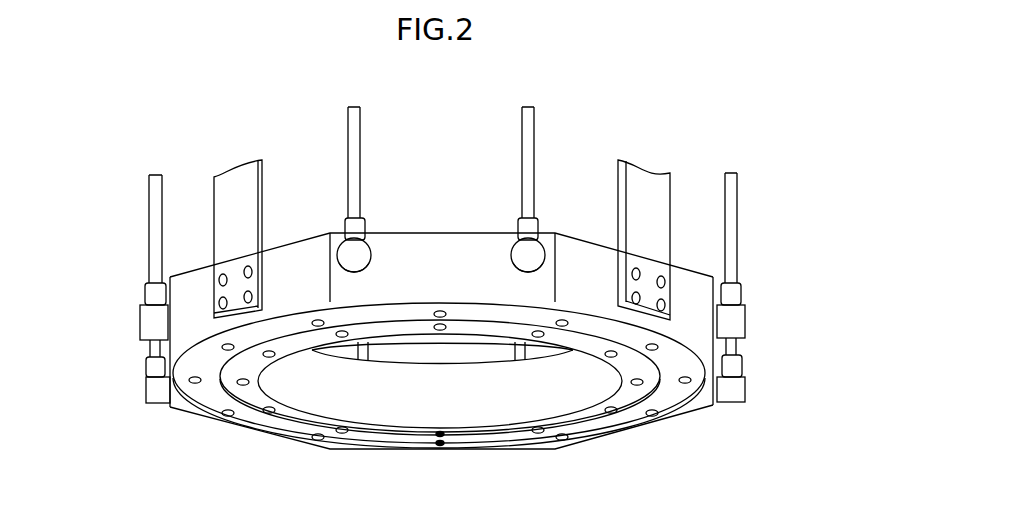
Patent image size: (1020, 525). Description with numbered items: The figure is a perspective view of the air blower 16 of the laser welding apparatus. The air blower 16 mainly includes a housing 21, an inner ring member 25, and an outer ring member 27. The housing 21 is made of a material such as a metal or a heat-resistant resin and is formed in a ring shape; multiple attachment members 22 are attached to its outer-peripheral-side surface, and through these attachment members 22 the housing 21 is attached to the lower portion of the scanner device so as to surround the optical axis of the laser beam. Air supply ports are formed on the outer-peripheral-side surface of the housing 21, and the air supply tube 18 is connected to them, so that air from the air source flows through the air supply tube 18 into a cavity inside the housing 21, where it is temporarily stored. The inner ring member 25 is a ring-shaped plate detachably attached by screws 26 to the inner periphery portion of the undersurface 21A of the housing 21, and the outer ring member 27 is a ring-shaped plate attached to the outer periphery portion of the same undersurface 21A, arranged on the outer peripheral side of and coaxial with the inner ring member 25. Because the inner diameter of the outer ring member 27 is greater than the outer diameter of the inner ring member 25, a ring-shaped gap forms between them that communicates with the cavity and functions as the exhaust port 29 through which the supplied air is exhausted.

The air blower 16 is at (708, 102).
The air supply tube 18 is at (150, 219).
The housing 21 is at (436, 240).
The undersurface of the housing 21A is at (697, 400).
The attachment members 22 is at (218, 178).
The inner ring member 25 is at (250, 394).
The screws 26 is at (540, 434).
The outer ring member 27 is at (207, 392).
The exhaust port 29 is at (223, 393).